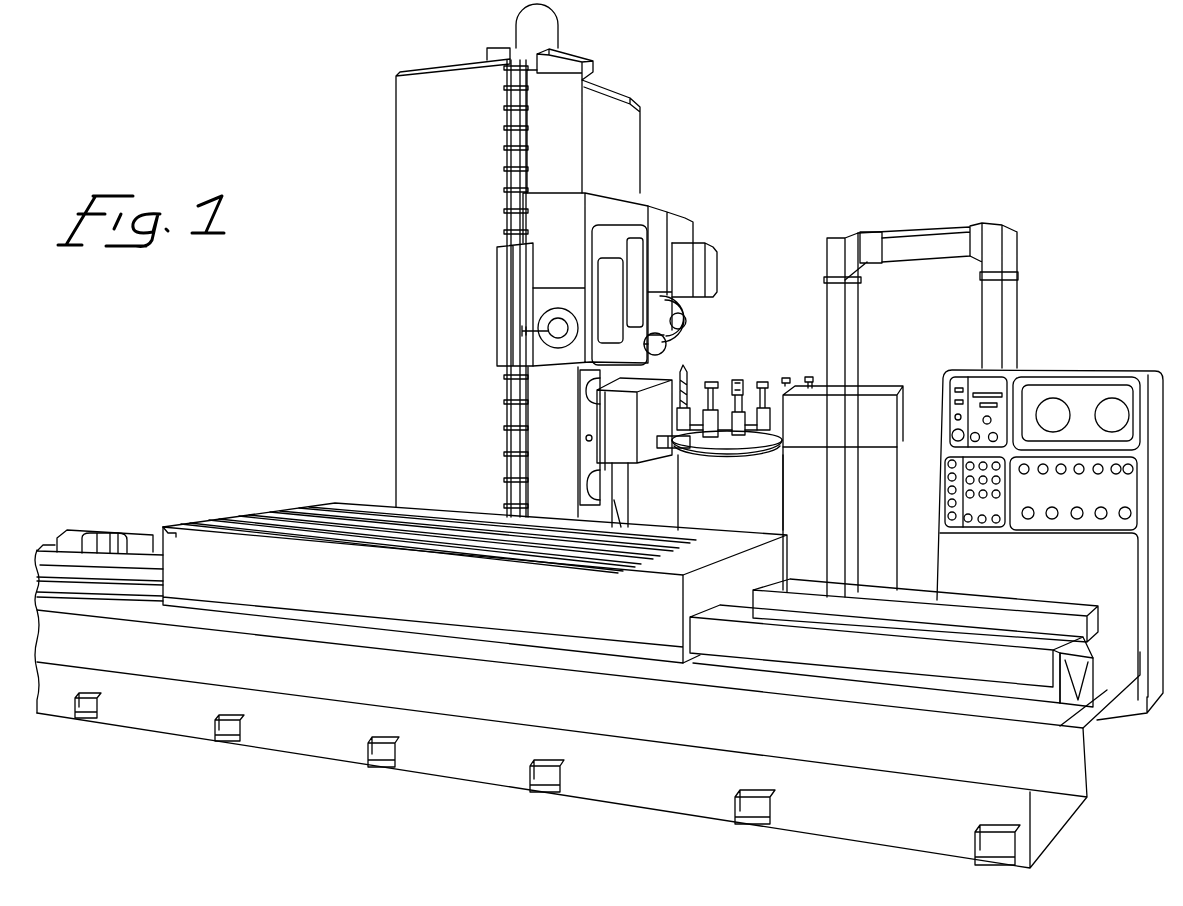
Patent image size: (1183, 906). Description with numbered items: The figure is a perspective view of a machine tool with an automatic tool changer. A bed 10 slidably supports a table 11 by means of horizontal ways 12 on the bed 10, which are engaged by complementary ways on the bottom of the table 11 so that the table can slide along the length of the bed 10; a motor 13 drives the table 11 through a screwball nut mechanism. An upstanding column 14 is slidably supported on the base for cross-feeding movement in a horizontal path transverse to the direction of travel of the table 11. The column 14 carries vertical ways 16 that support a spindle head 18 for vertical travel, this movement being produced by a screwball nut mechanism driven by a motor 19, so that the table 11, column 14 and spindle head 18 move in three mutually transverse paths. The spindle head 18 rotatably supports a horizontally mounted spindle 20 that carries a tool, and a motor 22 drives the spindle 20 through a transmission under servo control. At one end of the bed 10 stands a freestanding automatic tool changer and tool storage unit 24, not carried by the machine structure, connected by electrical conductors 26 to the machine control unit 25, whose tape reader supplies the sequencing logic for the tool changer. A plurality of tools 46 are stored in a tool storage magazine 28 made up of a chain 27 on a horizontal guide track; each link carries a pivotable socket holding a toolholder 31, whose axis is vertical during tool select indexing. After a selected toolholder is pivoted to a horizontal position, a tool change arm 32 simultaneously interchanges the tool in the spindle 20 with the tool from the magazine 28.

The bed 10 is at (655, 800).
The table 11 is at (147, 543).
The horizontal ways 12 is at (980, 655).
The motor 13 is at (96, 545).
The column 14 is at (409, 245).
The vertical ways 16 is at (550, 132).
The spindle head 18 is at (623, 217).
The motor 19 is at (550, 26).
The spindle 20 is at (552, 316).
The motor 22 is at (703, 260).
The automatic tool changer and tool storage unit 24 is at (903, 389).
The machine control unit 25 is at (1053, 373).
The electrical conductors 26 is at (890, 243).
The chain 27 is at (729, 431).
The tool storage magazine 28 is at (698, 411).
The toolholder 31 is at (766, 403).
The tool change arm 32 is at (593, 417).
The tools 46 is at (742, 370).